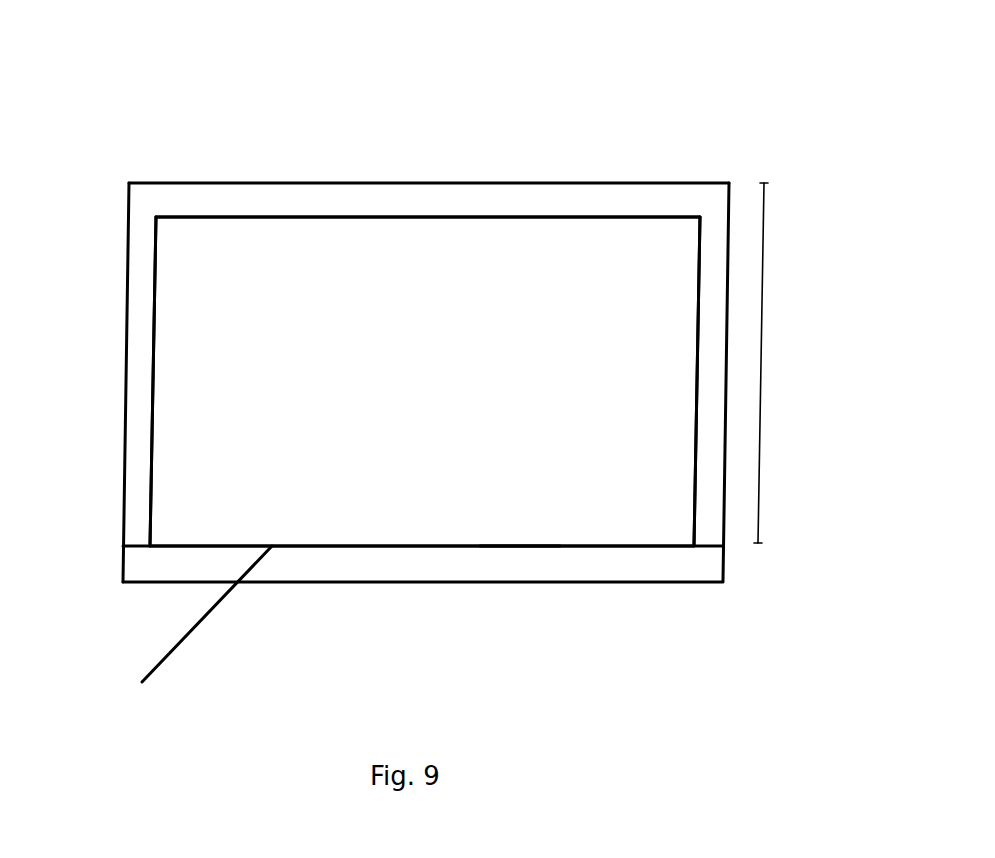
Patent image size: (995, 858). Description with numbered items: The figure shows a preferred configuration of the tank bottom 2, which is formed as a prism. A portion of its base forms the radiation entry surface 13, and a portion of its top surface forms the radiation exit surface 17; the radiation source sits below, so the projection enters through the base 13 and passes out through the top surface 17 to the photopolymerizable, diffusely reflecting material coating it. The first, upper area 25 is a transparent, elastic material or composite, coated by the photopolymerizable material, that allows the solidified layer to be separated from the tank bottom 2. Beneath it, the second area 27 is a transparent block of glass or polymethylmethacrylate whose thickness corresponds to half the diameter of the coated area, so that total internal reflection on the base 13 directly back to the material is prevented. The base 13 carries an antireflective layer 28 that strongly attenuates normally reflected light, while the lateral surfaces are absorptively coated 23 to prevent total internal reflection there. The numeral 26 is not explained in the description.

The tank bottom 2 is at (143, 121).
The radiation entry surface 13 is at (612, 583).
The radiation exit surface 17 is at (558, 182).
The absorptive coating 23 is at (142, 407).
The first, upper area 25 is at (453, 200).
The bottom wall inner surface 26 is at (500, 561).
The second area 27 is at (360, 513).
The antireflective layer 28 is at (193, 626).